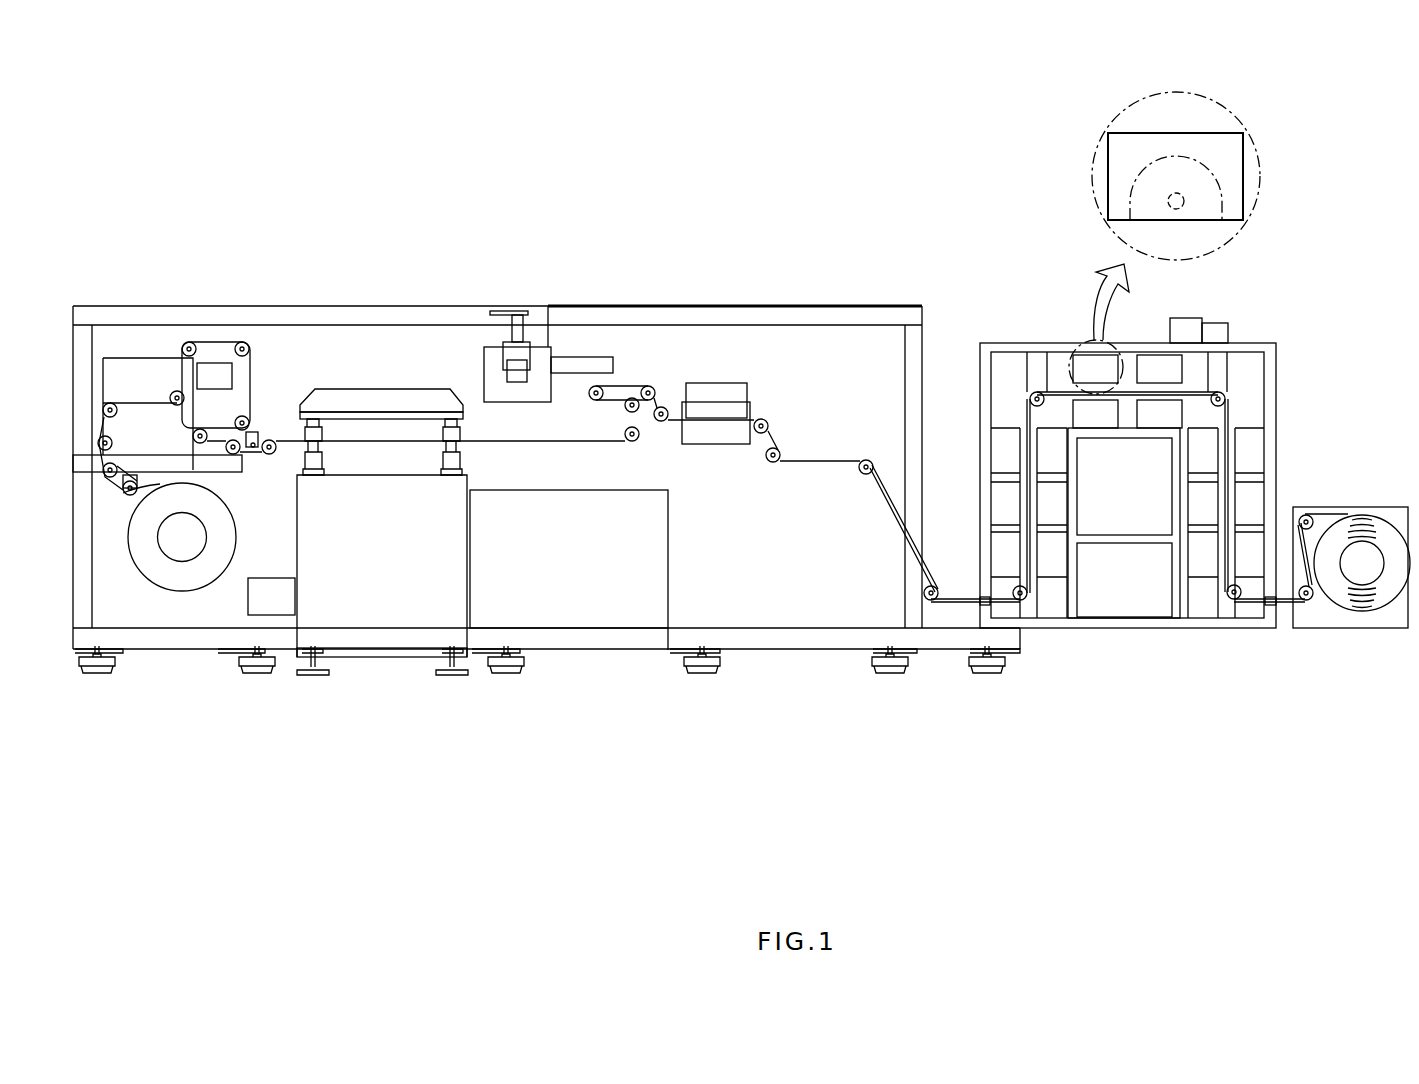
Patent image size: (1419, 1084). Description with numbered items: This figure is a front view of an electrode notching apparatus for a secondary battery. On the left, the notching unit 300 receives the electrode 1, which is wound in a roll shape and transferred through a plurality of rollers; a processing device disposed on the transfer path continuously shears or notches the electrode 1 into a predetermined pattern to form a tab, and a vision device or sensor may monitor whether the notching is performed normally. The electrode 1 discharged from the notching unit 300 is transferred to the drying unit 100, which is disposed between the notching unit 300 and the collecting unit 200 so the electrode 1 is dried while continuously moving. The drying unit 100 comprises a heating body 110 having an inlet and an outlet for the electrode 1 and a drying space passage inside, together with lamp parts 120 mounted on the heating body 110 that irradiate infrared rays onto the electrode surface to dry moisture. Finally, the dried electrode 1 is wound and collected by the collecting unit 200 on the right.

The electrode 1 is at (882, 496).
The drying unit 100 is at (1292, 280).
The heating body 110 is at (994, 343).
The lamp parts 120 is at (1173, 133).
The collecting unit 200 is at (1358, 470).
The notching unit 300 is at (533, 243).